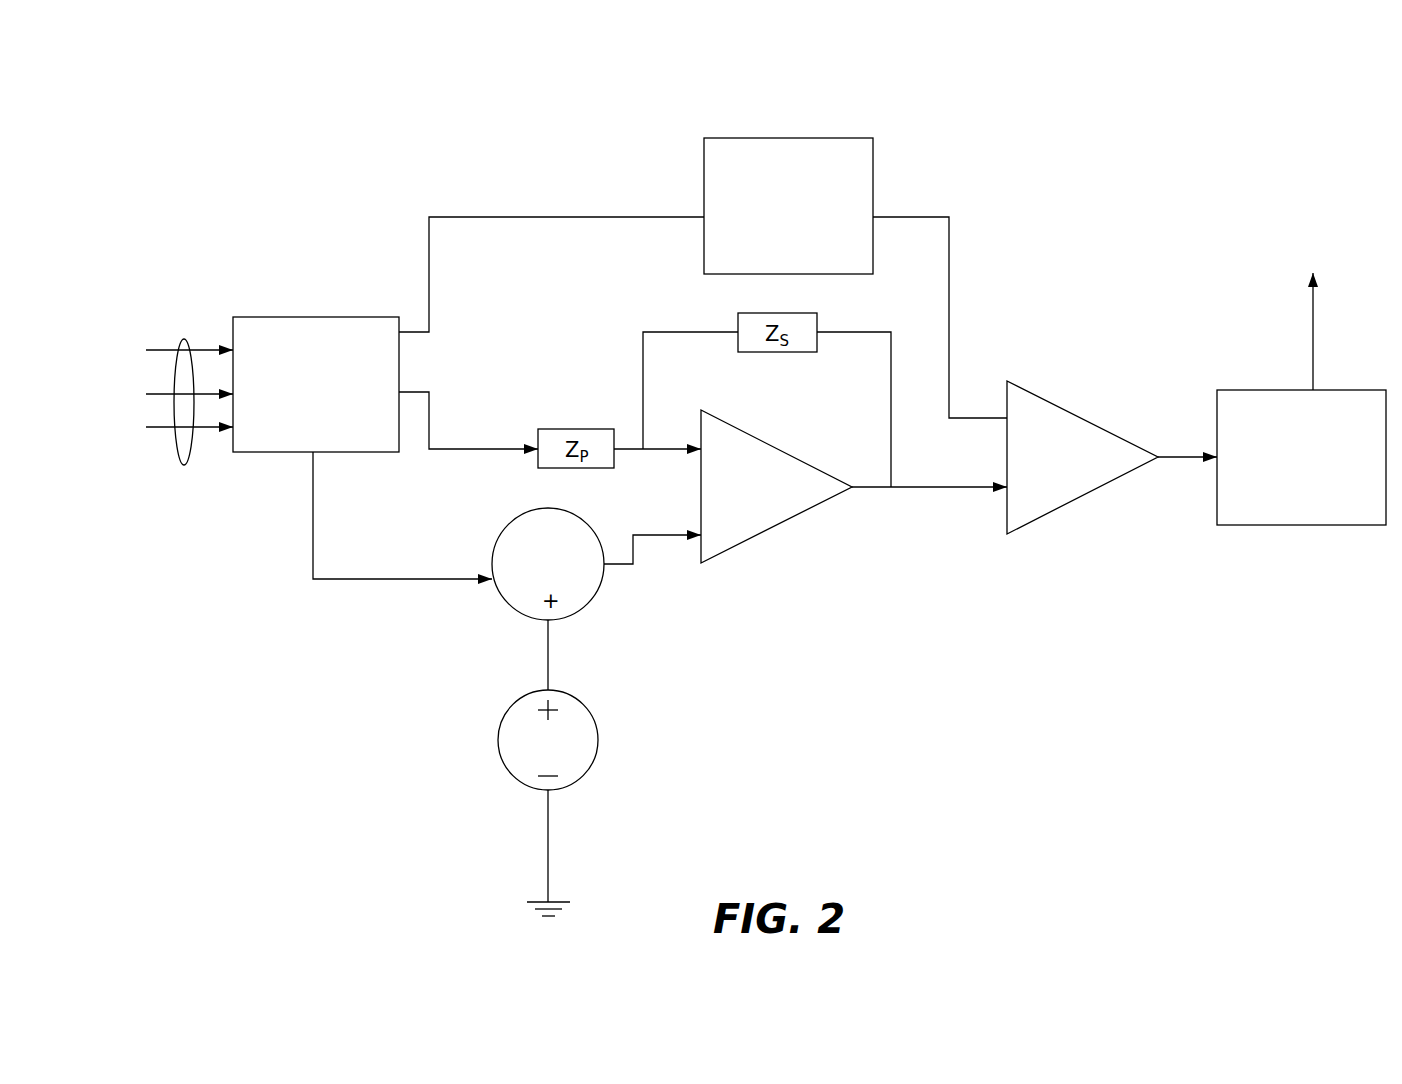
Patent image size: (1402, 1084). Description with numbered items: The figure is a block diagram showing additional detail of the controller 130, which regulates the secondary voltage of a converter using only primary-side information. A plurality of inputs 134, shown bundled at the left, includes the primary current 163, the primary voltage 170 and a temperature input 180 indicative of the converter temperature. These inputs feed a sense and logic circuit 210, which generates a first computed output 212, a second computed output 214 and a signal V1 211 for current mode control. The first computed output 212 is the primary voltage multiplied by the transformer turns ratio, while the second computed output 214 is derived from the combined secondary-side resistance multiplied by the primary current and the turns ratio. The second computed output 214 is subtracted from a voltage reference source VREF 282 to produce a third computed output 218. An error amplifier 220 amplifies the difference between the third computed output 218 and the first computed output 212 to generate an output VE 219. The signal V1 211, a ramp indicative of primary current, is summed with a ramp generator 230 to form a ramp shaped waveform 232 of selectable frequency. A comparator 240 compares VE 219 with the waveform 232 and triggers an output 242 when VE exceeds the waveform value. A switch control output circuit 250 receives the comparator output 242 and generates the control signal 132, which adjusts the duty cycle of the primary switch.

The controller 130 is at (1266, 130).
The control signal 132 is at (1312, 328).
The plurality of inputs 134 is at (182, 468).
The primary current 163 is at (155, 345).
The primary voltage 170 is at (153, 396).
The temperature input 180 is at (156, 433).
The sense and logic circuit 210 is at (298, 419).
The signal V1 211 is at (595, 218).
The first computed output 212 is at (490, 452).
The second computed output 214 is at (375, 583).
The third computed output 218 is at (623, 565).
The output VE 219 is at (935, 490).
The error amplifier 220 is at (734, 510).
The ramp generator 230 is at (770, 232).
The ramp shaped waveform 232 is at (952, 272).
The comparator 240 is at (1042, 489).
The comparator output 242 is at (1178, 460).
The switch control output circuit 250 is at (1283, 484).
The voltage reference source VREF 282 is at (466, 771).